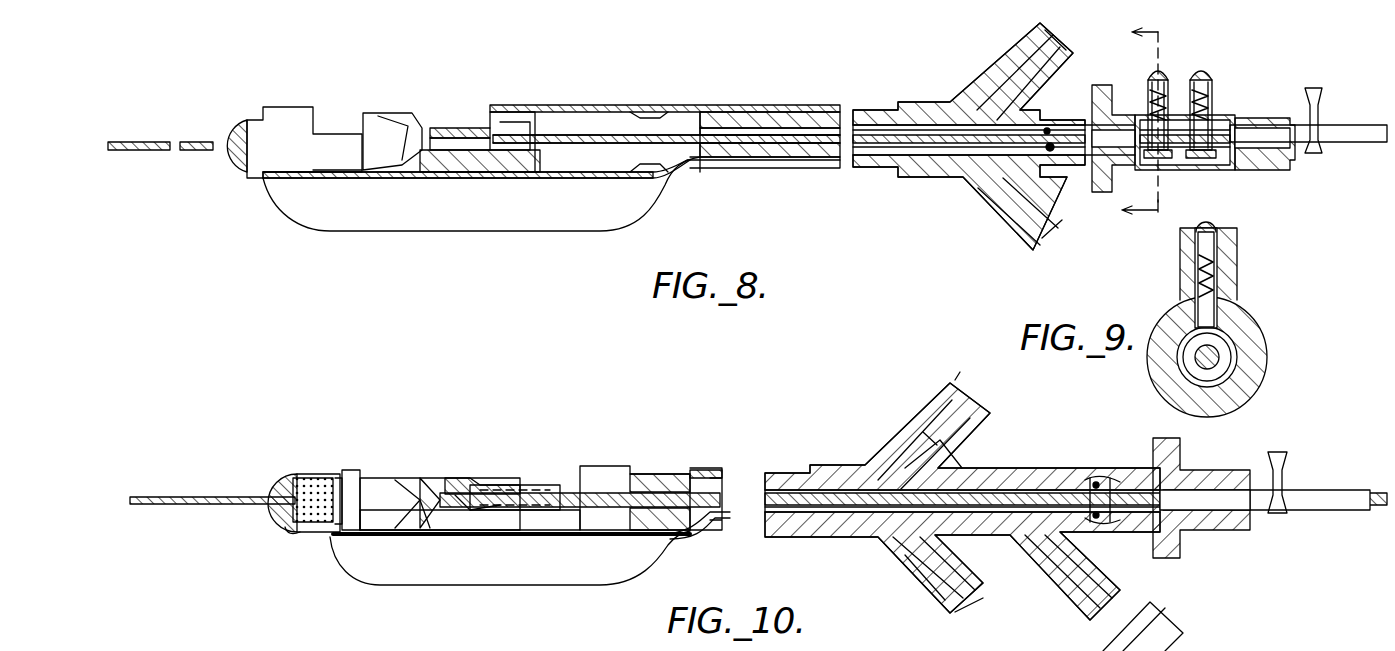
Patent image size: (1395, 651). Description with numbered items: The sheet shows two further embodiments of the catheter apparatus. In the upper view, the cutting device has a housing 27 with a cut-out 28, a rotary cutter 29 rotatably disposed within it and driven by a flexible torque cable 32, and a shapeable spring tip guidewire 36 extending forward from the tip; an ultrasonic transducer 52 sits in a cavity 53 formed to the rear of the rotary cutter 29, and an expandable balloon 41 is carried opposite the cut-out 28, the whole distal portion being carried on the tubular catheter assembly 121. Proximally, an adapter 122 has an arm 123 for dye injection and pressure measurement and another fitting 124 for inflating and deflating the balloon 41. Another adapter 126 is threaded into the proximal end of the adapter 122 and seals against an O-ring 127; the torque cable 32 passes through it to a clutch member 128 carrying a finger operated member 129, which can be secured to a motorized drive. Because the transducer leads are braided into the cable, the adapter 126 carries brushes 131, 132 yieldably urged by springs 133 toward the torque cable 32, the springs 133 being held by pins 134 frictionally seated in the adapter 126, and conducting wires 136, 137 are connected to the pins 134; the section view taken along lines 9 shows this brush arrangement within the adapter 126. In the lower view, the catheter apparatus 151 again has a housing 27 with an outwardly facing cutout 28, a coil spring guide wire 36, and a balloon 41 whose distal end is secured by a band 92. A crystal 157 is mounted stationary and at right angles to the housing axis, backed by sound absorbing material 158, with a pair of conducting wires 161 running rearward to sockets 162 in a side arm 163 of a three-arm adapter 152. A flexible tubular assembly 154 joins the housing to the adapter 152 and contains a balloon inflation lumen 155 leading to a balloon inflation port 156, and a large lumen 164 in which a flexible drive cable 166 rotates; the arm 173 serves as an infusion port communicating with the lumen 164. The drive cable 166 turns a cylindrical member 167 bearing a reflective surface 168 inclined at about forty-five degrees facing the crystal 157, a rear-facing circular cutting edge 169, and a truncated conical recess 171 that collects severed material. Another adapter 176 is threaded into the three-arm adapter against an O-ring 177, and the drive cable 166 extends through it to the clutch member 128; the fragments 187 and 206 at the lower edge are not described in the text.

In FIG. 8, the spring tip guide or guidewire 36 is at (130, 140).
In FIG. 10, the spring tip guide or guidewire 36 is at (178, 497).
In FIG. 8, the band 92 is at (251, 118).
In FIG. 10, the band 92 is at (312, 474).
In FIG. 8, the rotary cutter 29 is at (402, 114).
In FIG. 8, the ultrasonic transducer 52 is at (460, 126).
In FIG. 8, the cavity 53 is at (486, 112).
In FIG. 8, the catheter assembly 121 is at (643, 89).
In FIG. 8, the torque cable 32 is at (722, 112).
In FIG. 8, the balloon 41 is at (420, 234).
In FIG. 10, the balloon 41 is at (407, 590).
In FIG. 8, the adapter 122 is at (927, 66).
In FIG. 8, the arm 123 is at (1010, 55).
In FIG. 8, the fitting 124 is at (997, 218).
In FIG. 8, the O-ring 127 is at (1050, 152).
In FIG. 8, the brush 131 is at (1140, 112).
In FIG. 9, the brush 131 is at (1225, 312).
In FIG. 8, the brush 132 is at (1215, 104).
In FIG. 8, the spring 133 is at (1150, 95).
In FIG. 9, the spring 133 is at (1222, 282).
In FIG. 8, the pin 134 is at (1160, 78).
In FIG. 9, the pin 134 is at (1222, 245).
In FIG. 8, the conducting wire 136 is at (1158, 62).
In FIG. 9, the conducting wire 136 is at (1215, 222).
In FIG. 8, the conducting wire 137 is at (1215, 62).
In FIG. 8, the adapter 126 is at (1262, 178).
In FIG. 9, the adapter 126 is at (1276, 374).
In FIG. 8, the finger operated member 129 is at (1315, 88).
In FIG. 8, the clutch member 128 is at (1347, 142).
In FIG. 10, the clutch member 128 is at (1318, 505).
In FIG. 8, the section lines 9- 9 is at (1131, 116).
In FIG. 10, the sound absorbing material 158 is at (285, 512).
In FIG. 10, the cut-out 28 is at (363, 472).
In FIG. 10, the crystal 157 is at (364, 486).
In FIG. 10, the housing 27 is at (291, 540).
In FIG. 10, the conducting wires 161 is at (348, 538).
In FIG. 10, the cylindrical member 167 is at (435, 530).
In FIG. 10, the reflective surface 168 is at (420, 490).
In FIG. 10, the truncated conical recess 171 is at (518, 485).
In FIG. 10, the circular cutting edge 169 is at (525, 532).
In FIG. 10, the flexible tubular assembly 154 is at (700, 466).
In FIG. 10, the large lumen 164 is at (712, 470).
In FIG. 10, the balloon inflation lumen 155 is at (708, 530).
In FIG. 10, the catheter apparatus 151 is at (622, 417).
In FIG. 10, the three-arm adapter 152 is at (1000, 472).
In FIG. 10, the arm 173 is at (935, 410).
In FIG. 10, the flexible drive cable 166 is at (948, 478).
In FIG. 10, the O-ring 177 is at (1092, 478).
In FIG. 10, the adapter 176 is at (1232, 532).
In FIG. 10, the side arm 163 is at (948, 570).
In FIG. 10, the sockets 162 is at (980, 604).
In FIG. 10, the balloon inflation port 156 is at (1118, 580).
In FIG. 10, the connector tube 206 is at (1180, 638).
In FIG. 10, the fitting 187 is at (1037, 650).